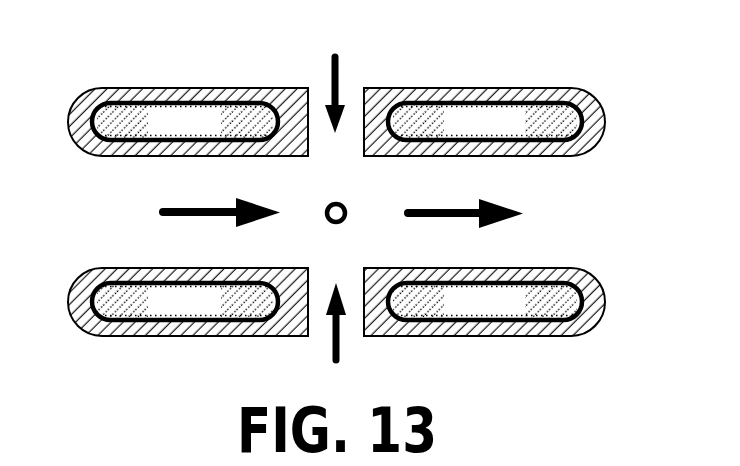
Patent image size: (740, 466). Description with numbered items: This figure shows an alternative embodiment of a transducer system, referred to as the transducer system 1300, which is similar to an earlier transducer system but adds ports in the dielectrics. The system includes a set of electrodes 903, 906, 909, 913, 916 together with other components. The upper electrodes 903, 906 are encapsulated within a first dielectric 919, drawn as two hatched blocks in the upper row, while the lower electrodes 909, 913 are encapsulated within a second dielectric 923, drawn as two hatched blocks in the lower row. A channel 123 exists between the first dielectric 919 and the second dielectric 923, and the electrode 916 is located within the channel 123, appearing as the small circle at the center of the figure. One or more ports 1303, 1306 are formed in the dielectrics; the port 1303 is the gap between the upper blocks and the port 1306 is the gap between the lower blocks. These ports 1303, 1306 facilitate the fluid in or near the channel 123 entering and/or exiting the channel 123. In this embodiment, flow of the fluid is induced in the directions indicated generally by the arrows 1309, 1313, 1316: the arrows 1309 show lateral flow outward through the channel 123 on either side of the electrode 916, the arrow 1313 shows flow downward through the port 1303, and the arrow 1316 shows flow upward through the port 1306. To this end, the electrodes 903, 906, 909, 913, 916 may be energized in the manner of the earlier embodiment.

The electrode 903 is at (164, 132).
The electrode 906 is at (465, 132).
The electrode 909 is at (164, 312).
The electrode 913 is at (465, 312).
The electrode 916 is at (342, 221).
The first dielectric 919 is at (103, 157).
The second dielectric 923 is at (113, 337).
The channel 123 is at (96, 237).
The transducer system 1300 is at (629, 366).
The port 1303 is at (359, 82).
The port 1306 is at (317, 343).
The arrow 1309 is at (425, 209).
The arrow 1313 is at (331, 67).
The arrow 1316 is at (339, 340).